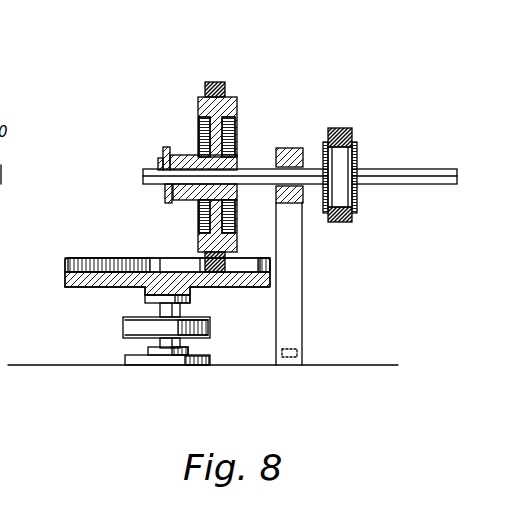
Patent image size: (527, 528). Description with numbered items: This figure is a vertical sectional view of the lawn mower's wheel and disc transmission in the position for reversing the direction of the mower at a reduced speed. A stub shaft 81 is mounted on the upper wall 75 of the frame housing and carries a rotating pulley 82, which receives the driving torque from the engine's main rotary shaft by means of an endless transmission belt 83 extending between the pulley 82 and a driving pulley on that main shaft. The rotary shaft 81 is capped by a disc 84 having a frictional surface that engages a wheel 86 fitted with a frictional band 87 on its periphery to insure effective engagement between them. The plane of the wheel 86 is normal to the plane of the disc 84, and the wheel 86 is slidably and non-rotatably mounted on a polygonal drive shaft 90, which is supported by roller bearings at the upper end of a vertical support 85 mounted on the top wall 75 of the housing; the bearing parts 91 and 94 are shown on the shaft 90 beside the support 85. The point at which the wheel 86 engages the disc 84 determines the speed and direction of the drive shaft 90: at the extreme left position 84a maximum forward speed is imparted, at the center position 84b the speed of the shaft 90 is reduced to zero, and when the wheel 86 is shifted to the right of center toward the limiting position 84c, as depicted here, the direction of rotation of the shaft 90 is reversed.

The housing upper wall 75 is at (340, 365).
The stub shaft 81 is at (160, 309).
The rotating pulley 82 is at (210, 327).
The endless transmission belt 83 is at (122, 331).
The disc 84 is at (66, 271).
The extreme left position on disc 84a is at (82, 258).
The center position on disc 84b is at (163, 258).
The right limiting position on disc 84c is at (207, 262).
The vertical support 85 is at (303, 268).
The wheel 86 is at (238, 131).
The frictional band 87 is at (212, 80).
The polygonal drive shaft 90 is at (420, 185).
The bearing ring 91 is at (357, 150).
The bearing nut 94 is at (338, 128).